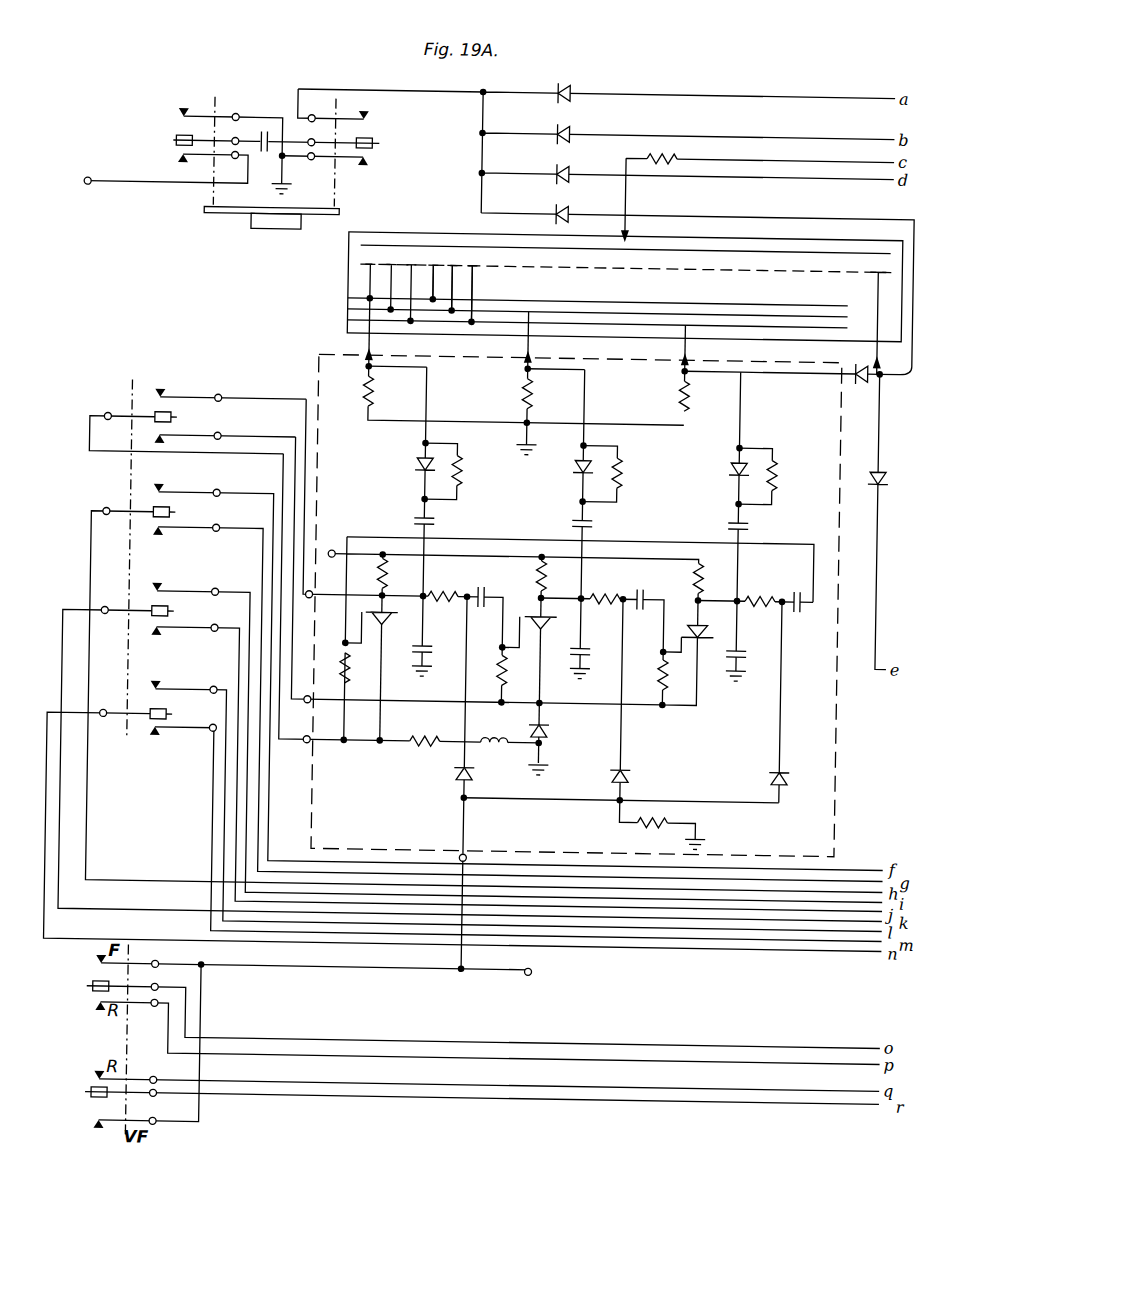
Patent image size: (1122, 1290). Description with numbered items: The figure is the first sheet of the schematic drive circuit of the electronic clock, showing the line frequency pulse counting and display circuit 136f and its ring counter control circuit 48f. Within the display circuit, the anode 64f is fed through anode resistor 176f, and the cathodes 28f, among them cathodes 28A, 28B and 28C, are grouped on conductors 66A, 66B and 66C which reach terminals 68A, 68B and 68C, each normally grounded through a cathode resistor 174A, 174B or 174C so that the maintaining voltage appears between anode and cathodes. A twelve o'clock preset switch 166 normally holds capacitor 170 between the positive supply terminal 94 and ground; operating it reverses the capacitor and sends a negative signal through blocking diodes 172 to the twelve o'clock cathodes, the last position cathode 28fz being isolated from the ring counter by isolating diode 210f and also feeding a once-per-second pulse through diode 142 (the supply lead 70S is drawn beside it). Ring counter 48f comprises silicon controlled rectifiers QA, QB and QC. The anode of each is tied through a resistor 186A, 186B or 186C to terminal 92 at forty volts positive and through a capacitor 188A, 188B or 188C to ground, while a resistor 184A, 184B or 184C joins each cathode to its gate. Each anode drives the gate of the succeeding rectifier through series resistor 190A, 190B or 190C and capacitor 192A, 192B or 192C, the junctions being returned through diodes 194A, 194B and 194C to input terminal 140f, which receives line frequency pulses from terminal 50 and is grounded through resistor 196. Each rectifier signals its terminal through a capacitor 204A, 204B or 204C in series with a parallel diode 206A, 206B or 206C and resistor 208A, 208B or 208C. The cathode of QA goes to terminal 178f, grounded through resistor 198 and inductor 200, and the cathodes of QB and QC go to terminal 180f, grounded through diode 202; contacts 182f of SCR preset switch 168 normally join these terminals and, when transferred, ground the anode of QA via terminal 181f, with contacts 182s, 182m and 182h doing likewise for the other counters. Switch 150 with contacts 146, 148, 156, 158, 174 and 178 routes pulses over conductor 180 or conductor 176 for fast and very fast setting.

The twelve o'clock preset switch 166 is at (196, 104).
The capacitor 170 is at (252, 133).
The 100 volt positive supply terminal 94 is at (80, 192).
The blocking diodes 172 is at (578, 166).
The anode resistor 176f is at (665, 162).
The last position cathode 28fz is at (873, 264).
The line frequency pulse counting and display circuit 136f is at (343, 238).
The anode 64f is at (372, 247).
The cathodes 28f is at (350, 276).
The cathode 28A is at (433, 262).
The cathode 28B is at (450, 264).
The cathode 28C is at (470, 264).
The cathode conductor 66A is at (488, 300).
The cathode conductor 66B is at (562, 311).
The cathode conductor 66C is at (626, 322).
The terminal 68A is at (380, 354).
The terminal 68B is at (536, 354).
The terminal 68C is at (696, 354).
The ring counter control circuit 48f is at (315, 357).
The SCR preset switch 168 is at (162, 392).
The transfer contacts 182f is at (112, 386).
The transfer contacts 182s is at (116, 502).
The transfer contacts 182m is at (114, 600).
The transfer contacts 182h is at (122, 738).
The cathode resistor 174A is at (362, 400).
The cathode resistor 174B is at (518, 404).
The cathode resistor 174C is at (676, 404).
The isolating diode 210f is at (858, 382).
The supply lead 70S is at (899, 520).
The diode 142 is at (880, 470).
The diode 206A is at (410, 470).
The diode 206B is at (572, 476).
The diode 206C is at (728, 482).
The resistor 208A is at (465, 470).
The resistor 208B is at (620, 476).
The resistor 208C is at (776, 474).
The capacitor 204A is at (435, 526).
The capacitor 204B is at (594, 524).
The capacitor 204C is at (750, 524).
The terminal 92 is at (338, 540).
The resistor 186A is at (380, 556).
The resistor 186B is at (541, 556).
The resistor 186C is at (708, 560).
The terminal 181f is at (300, 597).
The resistor 190A is at (440, 596).
The resistor 190B is at (596, 596).
The resistor 190C is at (758, 596).
The capacitor 192A is at (484, 594).
The capacitor 192B is at (644, 594).
The capacitor 192C is at (805, 606).
The silicon controlled rectifier QA is at (394, 628).
The silicon controlled rectifier QB is at (556, 628).
The silicon controlled rectifier QC is at (710, 636).
The capacitor 188A is at (444, 650).
The capacitor 188B is at (602, 650).
The capacitor 188C is at (755, 650).
The resistor 184A is at (356, 690).
The resistor 184B is at (510, 700).
The resistor 184C is at (672, 702).
The terminal 180f is at (312, 708).
The terminal 178f is at (306, 748).
The resistor 198 is at (418, 750).
The inductor 200 is at (494, 748).
The diode 202 is at (552, 734).
The diode 194A is at (460, 776).
The diode 194B is at (630, 776).
The diode 194C is at (770, 778).
The input terminal 140f is at (472, 858).
The resistor 196 is at (636, 826).
The terminal 50 is at (540, 976).
The contact 178 is at (102, 972).
The contact 148 is at (96, 996).
The contact 146 is at (104, 1014).
The contact 156 is at (102, 1082).
The contact 158 is at (98, 1102).
The contact 174 is at (104, 1132).
The switch 150 is at (122, 1154).
The conductor 180 is at (738, 1042).
The conductor 176 is at (528, 1102).